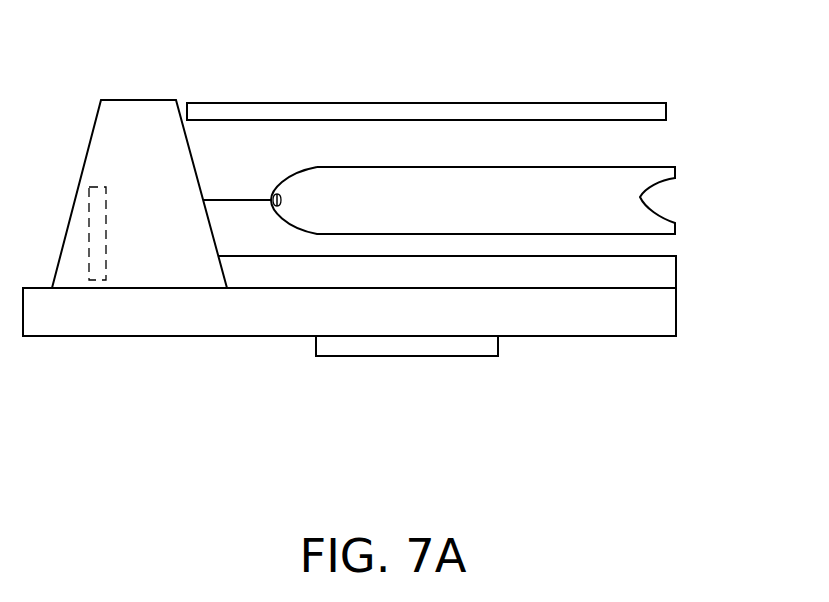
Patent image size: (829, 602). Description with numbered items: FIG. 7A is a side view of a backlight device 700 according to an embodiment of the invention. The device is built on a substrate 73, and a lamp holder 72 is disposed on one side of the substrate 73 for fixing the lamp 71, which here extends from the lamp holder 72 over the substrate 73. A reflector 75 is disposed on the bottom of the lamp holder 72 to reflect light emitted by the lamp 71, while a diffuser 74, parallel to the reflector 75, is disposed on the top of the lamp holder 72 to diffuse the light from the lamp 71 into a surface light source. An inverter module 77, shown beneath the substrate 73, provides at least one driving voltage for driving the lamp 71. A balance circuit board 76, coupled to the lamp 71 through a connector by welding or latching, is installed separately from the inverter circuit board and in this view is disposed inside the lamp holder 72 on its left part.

The lamp 71 is at (640, 165).
The lamp holder 72 is at (131, 100).
The substrate 73 is at (677, 320).
The diffuser 74 is at (670, 112).
The reflector 75 is at (677, 273).
The balance circuit board 76 is at (97, 186).
The inverter module 77 is at (499, 347).
The optical assembly 700 is at (695, 417).